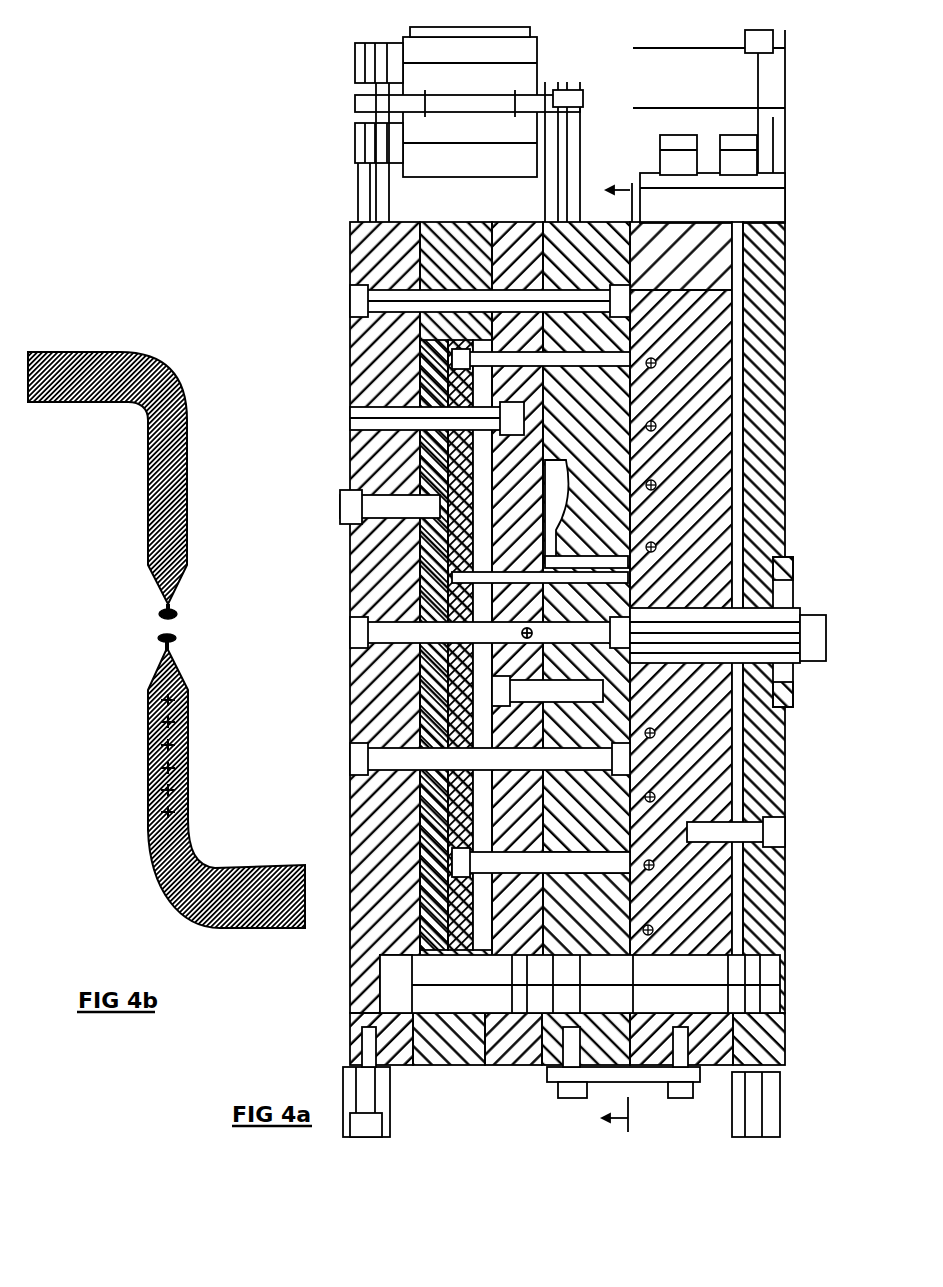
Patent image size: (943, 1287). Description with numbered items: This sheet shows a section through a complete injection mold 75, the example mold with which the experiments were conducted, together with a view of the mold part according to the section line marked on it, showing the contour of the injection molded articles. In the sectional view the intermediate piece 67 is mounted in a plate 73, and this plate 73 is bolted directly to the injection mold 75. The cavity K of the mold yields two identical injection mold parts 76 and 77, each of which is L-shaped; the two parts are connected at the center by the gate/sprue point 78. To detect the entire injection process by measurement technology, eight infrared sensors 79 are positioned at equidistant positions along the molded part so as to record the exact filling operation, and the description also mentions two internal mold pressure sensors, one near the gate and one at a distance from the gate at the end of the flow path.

In FIG. 4A, the injection mold 75 is at (562, 582).
In FIG. 4A, the cavity K is at (637, 473).
In FIG. 4A, the plate 73 is at (786, 498).
In FIG. 4A, the intermediate piece 67 is at (800, 668).
In FIG. 4B, the injection mold part 77 is at (187, 465).
In FIG. 4B, the gate/sprue point 78 is at (172, 624).
In FIG. 4B, the injection mold part 76 is at (188, 738).
In FIG. 4B, the infrared sensors 79 is at (148, 778).